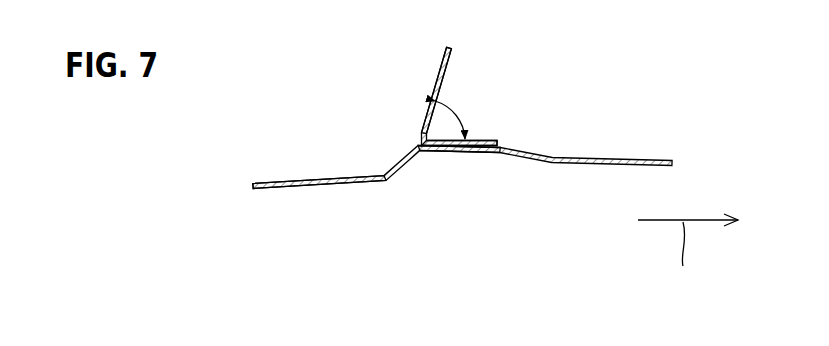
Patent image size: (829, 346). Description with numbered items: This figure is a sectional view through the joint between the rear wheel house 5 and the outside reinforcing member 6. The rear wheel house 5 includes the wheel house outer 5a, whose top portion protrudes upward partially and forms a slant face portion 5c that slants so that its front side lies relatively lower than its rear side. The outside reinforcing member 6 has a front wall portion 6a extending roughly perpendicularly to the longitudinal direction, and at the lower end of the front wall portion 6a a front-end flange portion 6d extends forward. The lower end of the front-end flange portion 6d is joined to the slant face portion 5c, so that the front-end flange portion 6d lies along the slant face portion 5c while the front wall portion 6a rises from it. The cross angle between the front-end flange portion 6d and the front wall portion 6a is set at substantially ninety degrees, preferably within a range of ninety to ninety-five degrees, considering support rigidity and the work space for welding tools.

The rear wheel house 5 is at (462, 196).
The wheel house outer 5a is at (275, 189).
The slant face portion 5c is at (441, 153).
The outside reinforcing member 6 is at (446, 71).
The front wall portion 6a is at (440, 68).
The front-end flange portion 6d is at (490, 141).